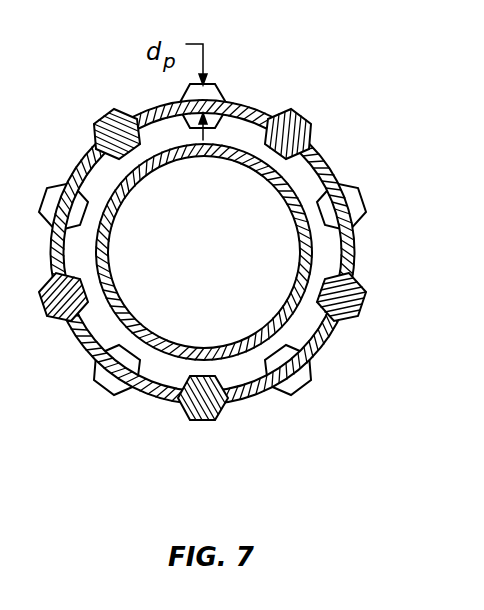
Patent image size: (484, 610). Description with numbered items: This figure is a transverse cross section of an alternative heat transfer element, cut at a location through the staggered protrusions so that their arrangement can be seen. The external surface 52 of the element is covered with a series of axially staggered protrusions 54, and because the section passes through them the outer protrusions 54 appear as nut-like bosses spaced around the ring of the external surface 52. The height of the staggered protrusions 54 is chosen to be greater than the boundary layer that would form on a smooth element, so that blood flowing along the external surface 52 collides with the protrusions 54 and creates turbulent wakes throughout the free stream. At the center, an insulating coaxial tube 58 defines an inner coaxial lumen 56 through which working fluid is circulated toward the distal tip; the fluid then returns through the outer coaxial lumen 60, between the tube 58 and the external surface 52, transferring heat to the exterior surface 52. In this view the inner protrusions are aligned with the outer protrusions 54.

The external surface 52 is at (313, 150).
The staggered protrusions 54 is at (362, 275).
The inner coaxial lumen 56 is at (219, 266).
The insulating coaxial tube 58 is at (273, 328).
The outer coaxial lumen 60 is at (322, 332).